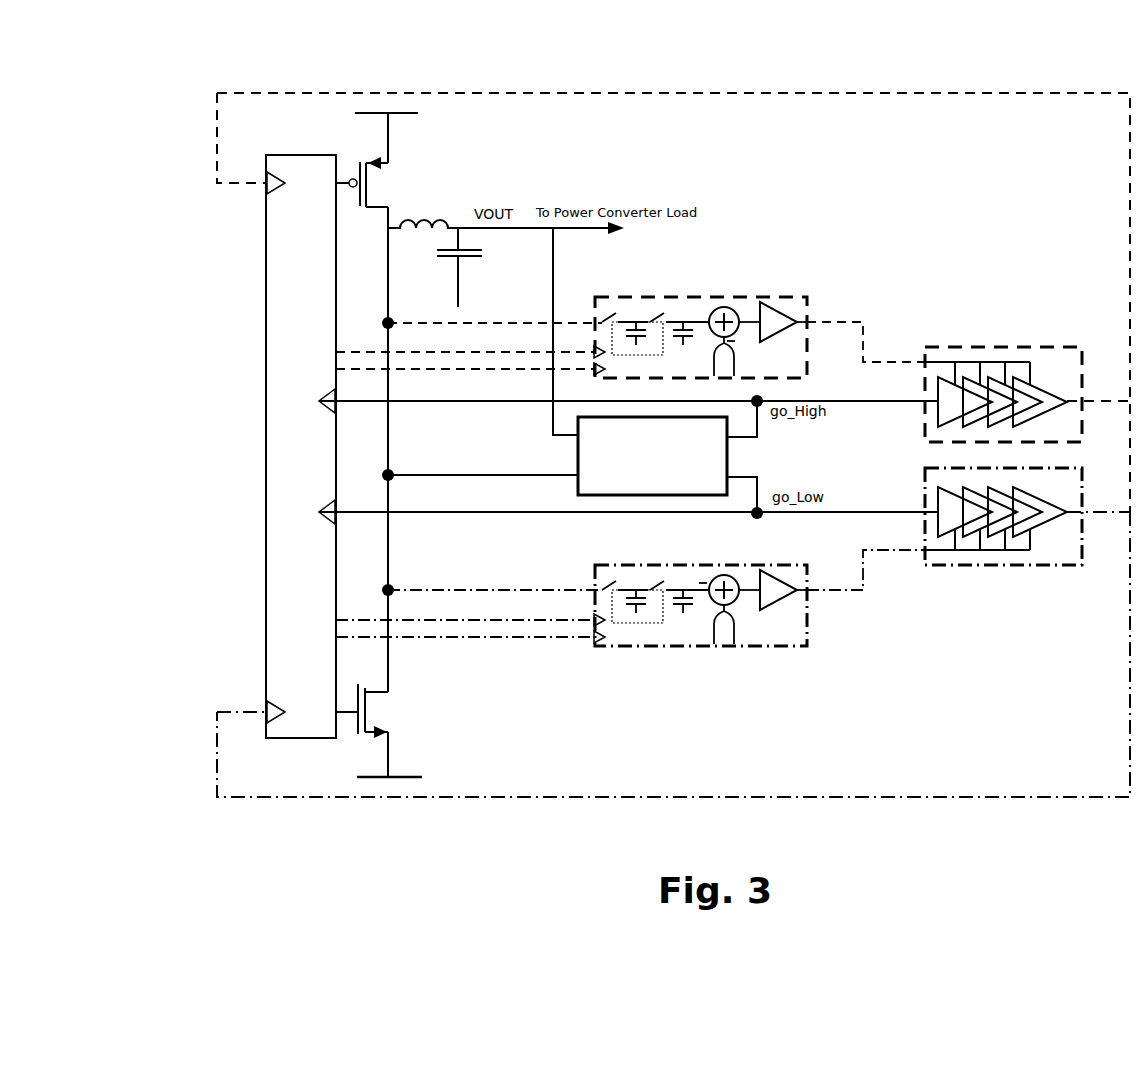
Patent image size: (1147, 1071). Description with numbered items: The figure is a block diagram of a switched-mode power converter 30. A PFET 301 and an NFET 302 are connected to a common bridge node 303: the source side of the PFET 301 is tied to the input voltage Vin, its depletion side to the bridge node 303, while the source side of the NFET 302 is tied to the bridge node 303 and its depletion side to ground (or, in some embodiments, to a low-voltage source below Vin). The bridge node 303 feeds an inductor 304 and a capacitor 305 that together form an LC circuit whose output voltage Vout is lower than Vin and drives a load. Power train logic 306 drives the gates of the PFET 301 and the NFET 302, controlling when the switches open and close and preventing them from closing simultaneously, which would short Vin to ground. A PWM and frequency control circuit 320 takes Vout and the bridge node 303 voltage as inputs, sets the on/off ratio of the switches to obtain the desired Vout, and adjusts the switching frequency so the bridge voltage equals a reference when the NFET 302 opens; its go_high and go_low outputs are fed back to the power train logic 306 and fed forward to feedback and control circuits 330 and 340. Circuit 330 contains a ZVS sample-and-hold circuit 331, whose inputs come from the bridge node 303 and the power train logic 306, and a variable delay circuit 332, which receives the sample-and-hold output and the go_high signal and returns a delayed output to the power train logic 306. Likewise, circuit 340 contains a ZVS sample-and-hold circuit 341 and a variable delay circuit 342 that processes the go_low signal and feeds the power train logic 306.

The switched-mode power converter 30 is at (202, 72).
The PFET 301 is at (414, 183).
The NFET 302 is at (417, 707).
The bridge node 303 is at (412, 545).
The inductor 304 is at (424, 246).
The capacitor 305 is at (500, 258).
The power train logic 306 is at (318, 341).
The PWM and frequency control circuit 320 is at (562, 456).
The feedback and control circuit 330 is at (1020, 252).
The zero-voltage-switching sample and hold circuit 331 is at (767, 280).
The variable delay circuit 332 is at (1032, 334).
The feedback and control circuit 340 is at (1020, 663).
The zero-voltage-switching sample and hold circuit 341 is at (618, 676).
The variable delay circuit 342 is at (1023, 588).